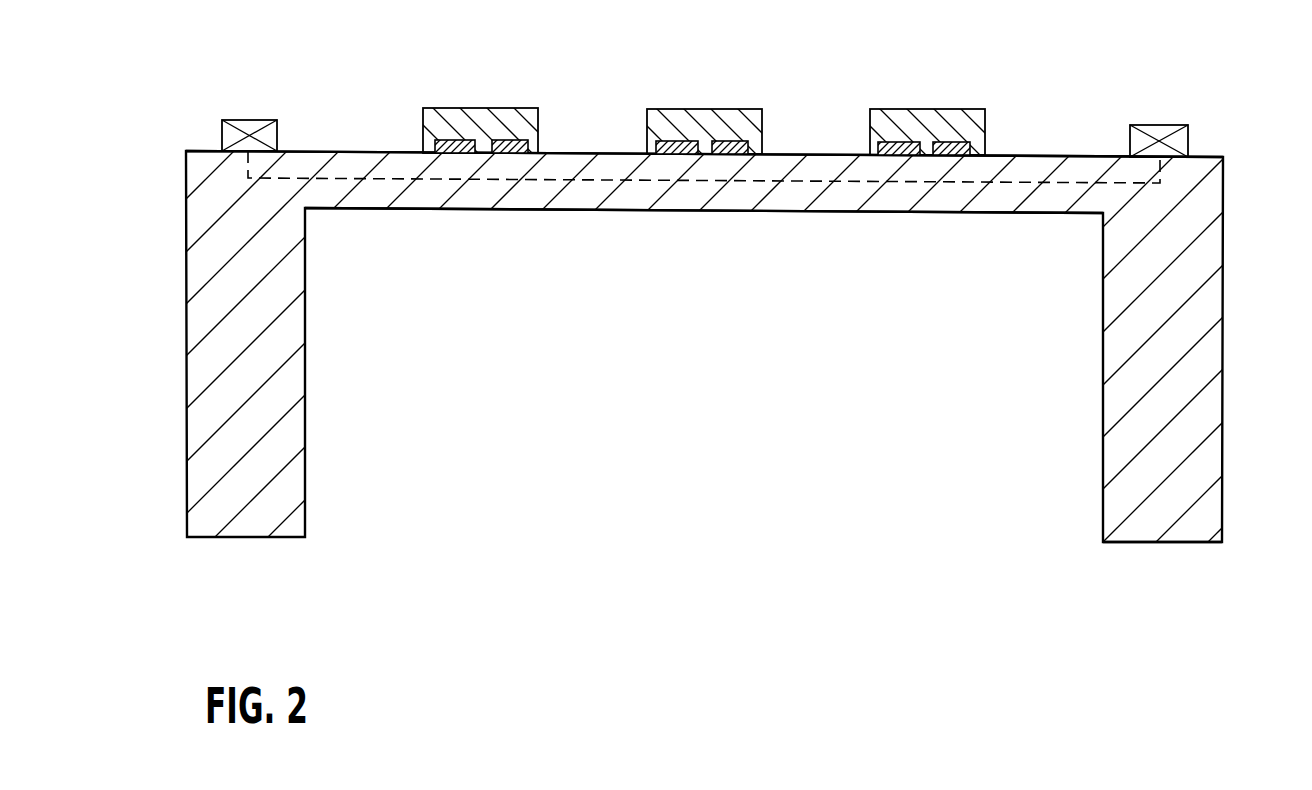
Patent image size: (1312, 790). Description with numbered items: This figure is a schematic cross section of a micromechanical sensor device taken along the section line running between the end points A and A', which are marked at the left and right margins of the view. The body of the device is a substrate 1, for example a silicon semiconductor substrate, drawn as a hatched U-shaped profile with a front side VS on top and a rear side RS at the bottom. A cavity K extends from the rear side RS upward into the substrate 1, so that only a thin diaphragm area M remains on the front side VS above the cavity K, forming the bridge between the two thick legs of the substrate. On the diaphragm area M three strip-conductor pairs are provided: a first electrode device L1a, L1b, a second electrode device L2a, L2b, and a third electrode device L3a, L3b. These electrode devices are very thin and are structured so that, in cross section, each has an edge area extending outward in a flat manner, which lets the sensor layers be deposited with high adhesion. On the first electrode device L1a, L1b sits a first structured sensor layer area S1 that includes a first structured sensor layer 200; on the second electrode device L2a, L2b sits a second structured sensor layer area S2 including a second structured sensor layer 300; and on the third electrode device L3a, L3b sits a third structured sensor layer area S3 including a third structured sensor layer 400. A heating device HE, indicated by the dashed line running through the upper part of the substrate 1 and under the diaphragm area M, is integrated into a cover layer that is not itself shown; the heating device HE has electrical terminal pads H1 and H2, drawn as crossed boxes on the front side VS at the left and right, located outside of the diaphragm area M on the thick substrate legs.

The substrate 1 is at (1223, 157).
The front side VS is at (195, 151).
The rear side RS is at (1163, 542).
The heating device HE is at (348, 178).
The diaphragm area M is at (813, 213).
The cavity K is at (728, 385).
The section line end point A is at (104, 361).
The section line end point A' is at (1294, 361).
The electrical terminal pad of heating device H1 is at (248, 120).
The electrical terminal pad of heating device H2 is at (1157, 125).
The first structured sensor layer area S1 is at (478, 108).
The second structured sensor layer area S2 is at (705, 109).
The third structured sensor layer area S3 is at (926, 109).
The first structured sensor layer 200 is at (517, 151).
The second structured sensor layer 300 is at (740, 151).
The third structured sensor layer 400 is at (962, 151).
The first electrode device L1a is at (513, 153).
The first electrode device L1b is at (457, 153).
The second electrode device L2a is at (735, 154).
The second electrode device L2b is at (680, 154).
The third electrode device L3a is at (957, 155).
The third electrode device L3b is at (902, 155).